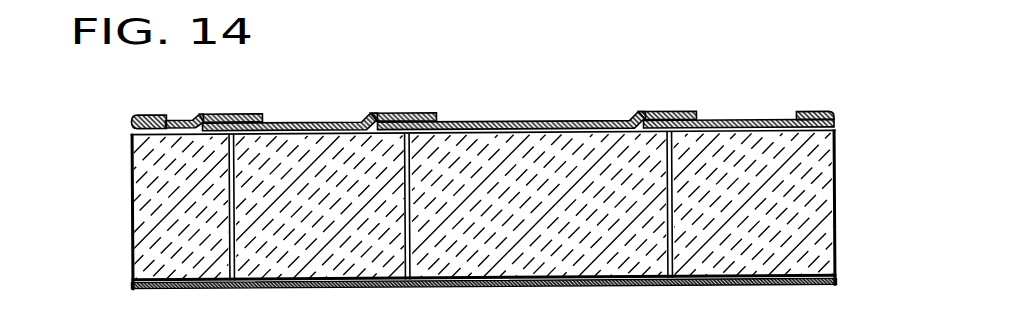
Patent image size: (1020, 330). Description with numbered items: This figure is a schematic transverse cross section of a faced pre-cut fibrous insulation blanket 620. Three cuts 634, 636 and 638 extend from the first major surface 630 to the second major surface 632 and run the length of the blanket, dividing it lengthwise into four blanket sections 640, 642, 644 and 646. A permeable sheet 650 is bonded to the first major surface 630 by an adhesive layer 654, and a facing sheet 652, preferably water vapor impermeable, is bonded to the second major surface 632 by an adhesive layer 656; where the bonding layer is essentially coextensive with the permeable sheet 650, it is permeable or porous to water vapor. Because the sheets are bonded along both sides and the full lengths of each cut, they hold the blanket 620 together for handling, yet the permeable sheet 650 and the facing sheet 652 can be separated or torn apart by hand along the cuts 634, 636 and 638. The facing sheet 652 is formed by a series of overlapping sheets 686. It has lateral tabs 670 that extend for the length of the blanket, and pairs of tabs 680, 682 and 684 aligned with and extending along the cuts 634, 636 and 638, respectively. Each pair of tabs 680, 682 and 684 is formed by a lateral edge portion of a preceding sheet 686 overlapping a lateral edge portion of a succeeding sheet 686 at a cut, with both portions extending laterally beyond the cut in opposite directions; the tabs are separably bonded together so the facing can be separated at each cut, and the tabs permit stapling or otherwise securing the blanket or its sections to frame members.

The pre-cut fibrous insulation blanket 620 is at (486, 172).
The first major surface 630 is at (491, 229).
The second major surface 632 is at (493, 83).
The cut 634 is at (230, 277).
The cut 636 is at (404, 277).
The cut 638 is at (667, 276).
The blanket section 640 is at (205, 222).
The blanket section 642 is at (340, 221).
The blanket section 644 is at (558, 217).
The blanket section 646 is at (770, 218).
The permeable sheet 650 is at (468, 287).
The facing sheet 652 is at (448, 122).
The adhesive layer 654 is at (578, 278).
The adhesive layer 656 is at (483, 128).
The lateral tab 670 is at (156, 114).
The pair of tabs 680 is at (256, 113).
The pair of tabs 682 is at (408, 111).
The pair of tabs 684 is at (690, 105).
The overlapping sheet 686 is at (178, 119).